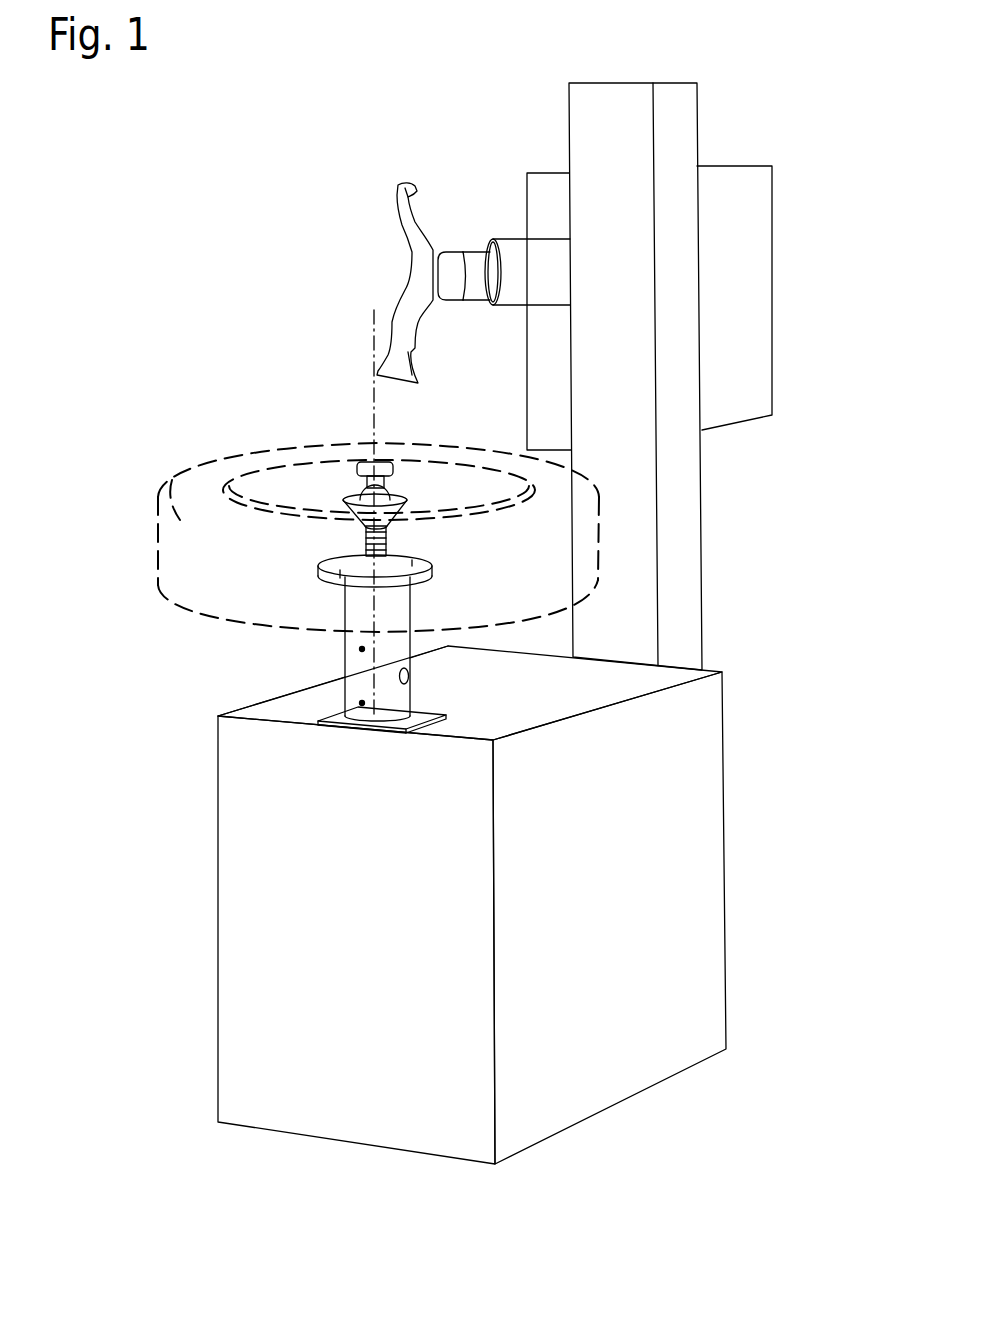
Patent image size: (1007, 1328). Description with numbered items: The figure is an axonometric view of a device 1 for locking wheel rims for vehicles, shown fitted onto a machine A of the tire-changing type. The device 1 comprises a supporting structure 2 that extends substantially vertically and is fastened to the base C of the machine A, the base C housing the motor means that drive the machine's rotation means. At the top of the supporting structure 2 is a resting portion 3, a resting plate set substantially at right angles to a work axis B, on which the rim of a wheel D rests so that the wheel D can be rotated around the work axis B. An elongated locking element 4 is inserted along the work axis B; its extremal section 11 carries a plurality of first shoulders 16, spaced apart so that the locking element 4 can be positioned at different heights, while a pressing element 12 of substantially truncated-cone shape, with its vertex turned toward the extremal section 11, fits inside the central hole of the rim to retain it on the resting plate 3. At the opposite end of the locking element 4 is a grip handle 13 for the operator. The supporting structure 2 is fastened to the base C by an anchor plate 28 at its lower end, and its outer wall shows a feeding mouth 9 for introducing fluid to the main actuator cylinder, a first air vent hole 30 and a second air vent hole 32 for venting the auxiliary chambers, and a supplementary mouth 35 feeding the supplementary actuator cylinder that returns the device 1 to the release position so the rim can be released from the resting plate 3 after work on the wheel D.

The machine A is at (722, 768).
The work axis B is at (300, 481).
The base C is at (650, 958).
The wheel D is at (157, 497).
The device for locking wheel rims 1 is at (245, 670).
The supporting structure 2 is at (393, 612).
The resting portion 3 is at (320, 565).
The locking element 4 is at (352, 487).
The feeding mouth 9 is at (362, 649).
The extremal section 11 is at (395, 548).
The pressing element 12 is at (433, 503).
The grip handle 13 is at (372, 462).
The first shoulder 16 is at (433, 560).
The anchor plate 28 is at (443, 712).
The first air vent hole 30 is at (362, 642).
The second air vent hole 32 is at (362, 617).
The supplementary mouth 35 is at (362, 703).